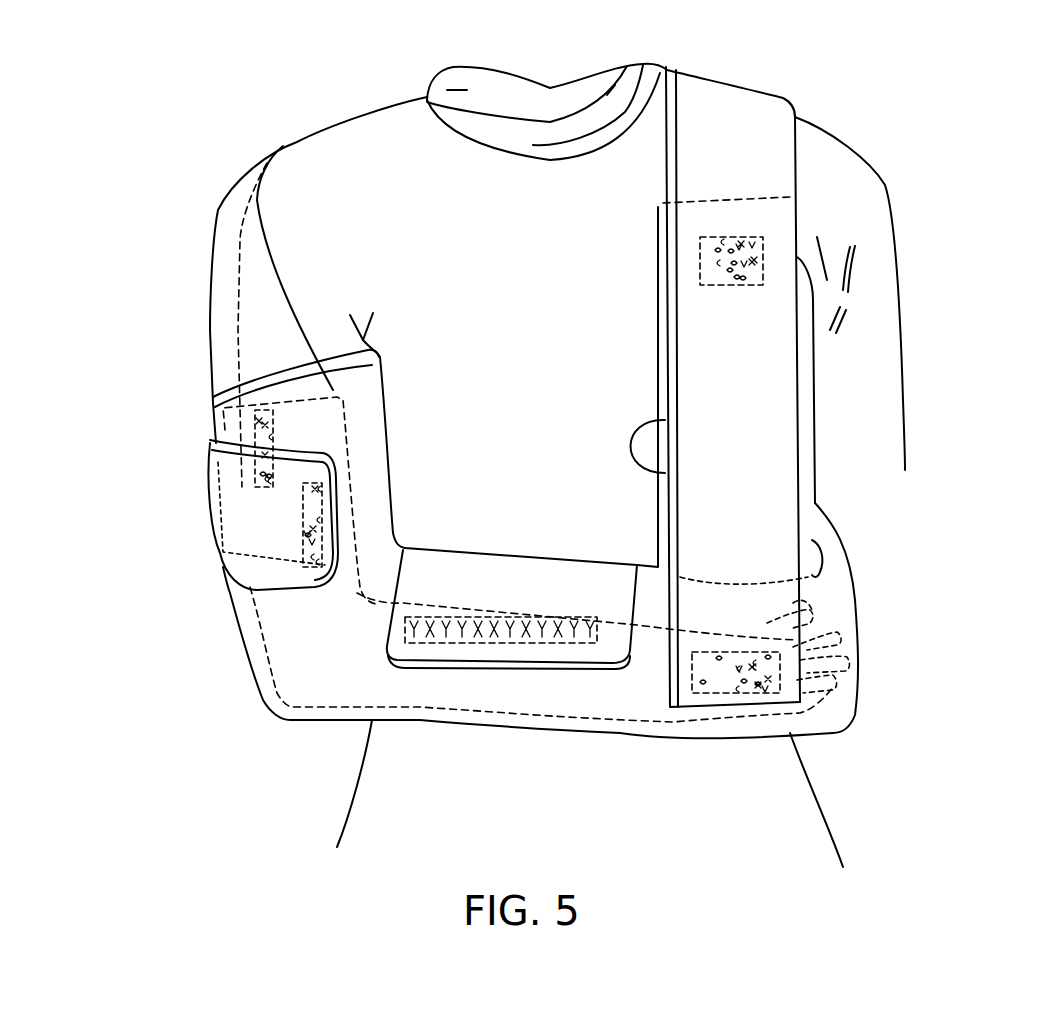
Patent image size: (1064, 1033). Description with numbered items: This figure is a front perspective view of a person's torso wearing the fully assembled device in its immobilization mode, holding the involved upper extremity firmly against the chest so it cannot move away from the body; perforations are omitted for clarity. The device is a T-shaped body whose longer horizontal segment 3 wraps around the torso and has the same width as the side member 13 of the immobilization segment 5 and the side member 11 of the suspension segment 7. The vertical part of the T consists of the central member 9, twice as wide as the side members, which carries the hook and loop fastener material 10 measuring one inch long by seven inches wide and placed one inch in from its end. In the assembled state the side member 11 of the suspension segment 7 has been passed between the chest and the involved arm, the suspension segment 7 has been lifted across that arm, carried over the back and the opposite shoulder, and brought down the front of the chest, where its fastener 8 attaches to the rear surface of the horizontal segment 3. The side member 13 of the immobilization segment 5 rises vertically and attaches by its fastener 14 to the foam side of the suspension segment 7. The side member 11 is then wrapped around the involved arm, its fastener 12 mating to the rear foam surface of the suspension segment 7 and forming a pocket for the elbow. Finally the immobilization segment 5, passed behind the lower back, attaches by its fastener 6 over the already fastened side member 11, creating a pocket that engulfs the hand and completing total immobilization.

The horizontal segment 3 is at (617, 737).
The immobilization segment 5 is at (283, 592).
The hook and loop fastener 6 is at (312, 525).
The suspension segment 7 is at (737, 87).
The hook and loop fastener 8 is at (770, 683).
The central member 9 is at (387, 620).
The hook and loop fastener material 10 is at (522, 633).
The side member 11 is at (325, 380).
The hook and loop fastener 12 is at (262, 440).
The side member 13 is at (665, 473).
The hook and loop fastener 14 is at (737, 230).